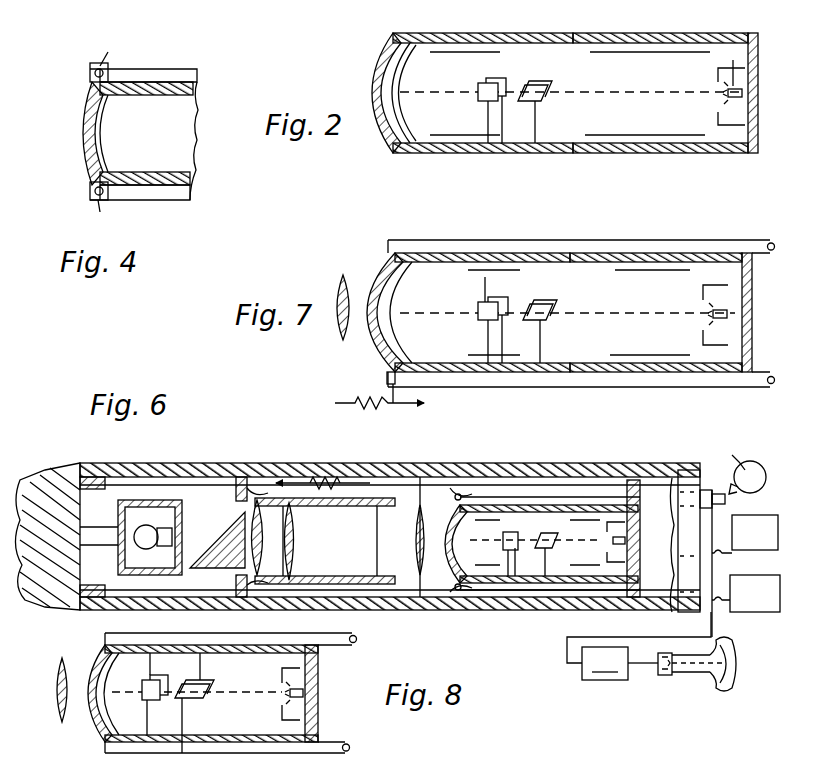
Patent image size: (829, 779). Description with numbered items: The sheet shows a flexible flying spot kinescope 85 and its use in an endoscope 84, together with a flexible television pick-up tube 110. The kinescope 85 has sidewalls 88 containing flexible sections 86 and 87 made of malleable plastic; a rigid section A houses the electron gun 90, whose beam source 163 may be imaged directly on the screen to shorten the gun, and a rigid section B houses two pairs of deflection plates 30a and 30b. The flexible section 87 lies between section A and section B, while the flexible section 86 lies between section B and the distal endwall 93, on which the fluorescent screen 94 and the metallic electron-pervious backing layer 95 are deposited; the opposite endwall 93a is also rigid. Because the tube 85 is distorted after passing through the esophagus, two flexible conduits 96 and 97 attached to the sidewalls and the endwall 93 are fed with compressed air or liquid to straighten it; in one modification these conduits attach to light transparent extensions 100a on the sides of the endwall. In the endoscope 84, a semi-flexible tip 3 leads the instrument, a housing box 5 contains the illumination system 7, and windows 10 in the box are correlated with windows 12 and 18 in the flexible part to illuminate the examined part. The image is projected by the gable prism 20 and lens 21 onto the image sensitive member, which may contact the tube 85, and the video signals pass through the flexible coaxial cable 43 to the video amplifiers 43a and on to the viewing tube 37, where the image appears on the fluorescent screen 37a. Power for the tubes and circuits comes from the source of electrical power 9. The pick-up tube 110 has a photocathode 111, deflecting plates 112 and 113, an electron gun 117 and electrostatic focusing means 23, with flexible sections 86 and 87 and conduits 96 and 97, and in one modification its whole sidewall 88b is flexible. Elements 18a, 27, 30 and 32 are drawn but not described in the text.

In FIG. 6, the tip 3 is at (32, 487).
In FIG. 6, the housing box 5 is at (170, 512).
In FIG. 6, the illumination system 7 is at (144, 535).
In FIG. 6, the source of electrical power 9 is at (771, 518).
In FIG. 6, the windows 10 is at (88, 471).
In FIG. 6, the windows 12 is at (153, 466).
In FIG. 6, the window 18 is at (211, 612).
In FIG. 6, the image sensitive member frame 18a is at (218, 468).
In FIG. 6, the gable prism 20 is at (230, 546).
In FIG. 6, the lens 21 is at (252, 556).
In FIG. 7, the electrostatic focusing fields 23 is at (476, 270).
In FIG. 6, the partition 27 is at (236, 488).
In FIG. 2, the electrode conductors 30 is at (631, 135).
In FIG. 2, the deflection plates 30a is at (480, 85).
In FIG. 2, the deflection plates 30b is at (544, 85).
In FIG. 6, the saw tooth generator 32 is at (746, 614).
In FIG. 6, the viewing tube 37 is at (668, 680).
In FIG. 6, the fluorescent screen 37a is at (730, 661).
In FIG. 6, the flexible coaxial cable 43 is at (321, 482).
In FIG. 6, the video amplifiers 43a is at (605, 664).
In FIG. 6, the endoscope 84 is at (363, 470).
In FIG. 2, the flying spot kinescope 85 is at (423, 64).
In FIG. 6, the flying spot kinescope 85 is at (569, 520).
In FIG. 2, the flexible section 86 is at (449, 40).
In FIG. 7, the flexible section 86 is at (424, 253).
In FIG. 2, the flexible section 87 is at (601, 40).
In FIG. 7, the flexible section 87 is at (629, 253).
In FIG. 2, the sidewalls 88 is at (706, 157).
In FIG. 8, the sidewall 88b is at (183, 742).
In FIG. 2, the electron gun 90 is at (732, 112).
In FIG. 4, the endwall 93 is at (84, 128).
In FIG. 2, the endwall 93 is at (374, 70).
In FIG. 2, the endwall 93a is at (759, 55).
In FIG. 2, the fluorescent screen 94 is at (399, 44).
In FIG. 2, the backing layer 95 is at (403, 141).
In FIG. 4, the flexible conduit 96 is at (150, 72).
In FIG. 7, the flexible conduit 96 is at (576, 380).
In FIG. 6, the flexible conduit 96 is at (516, 498).
In FIG. 8, the flexible conduit 96 is at (273, 648).
In FIG. 4, the flexible conduit 97 is at (152, 190).
In FIG. 7, the flexible conduit 97 is at (499, 247).
In FIG. 8, the flexible conduit 97 is at (332, 768).
In FIG. 4, the light transparent extensions 100a is at (90, 74).
In FIG. 7, the pick-up tube 110 is at (669, 292).
In FIG. 7, the photocathode 111 is at (386, 310).
In FIG. 8, the photocathode 111 is at (101, 714).
In FIG. 7, the deflecting plates 112 is at (498, 318).
In FIG. 8, the deflecting plates 112 is at (165, 694).
In FIG. 7, the deflecting plates 113 is at (545, 304).
In FIG. 8, the deflecting plates 113 is at (201, 684).
In FIG. 7, the electron gun 117 is at (722, 297).
In FIG. 8, the electron gun 117 is at (301, 684).
In FIG. 2, the source of the electron beam 163 is at (733, 60).
In FIG. 2, the section A is at (686, 150).
In FIG. 7, the section A is at (673, 375).
In FIG. 2, the section B is at (529, 148).
In FIG. 7, the section B is at (527, 373).